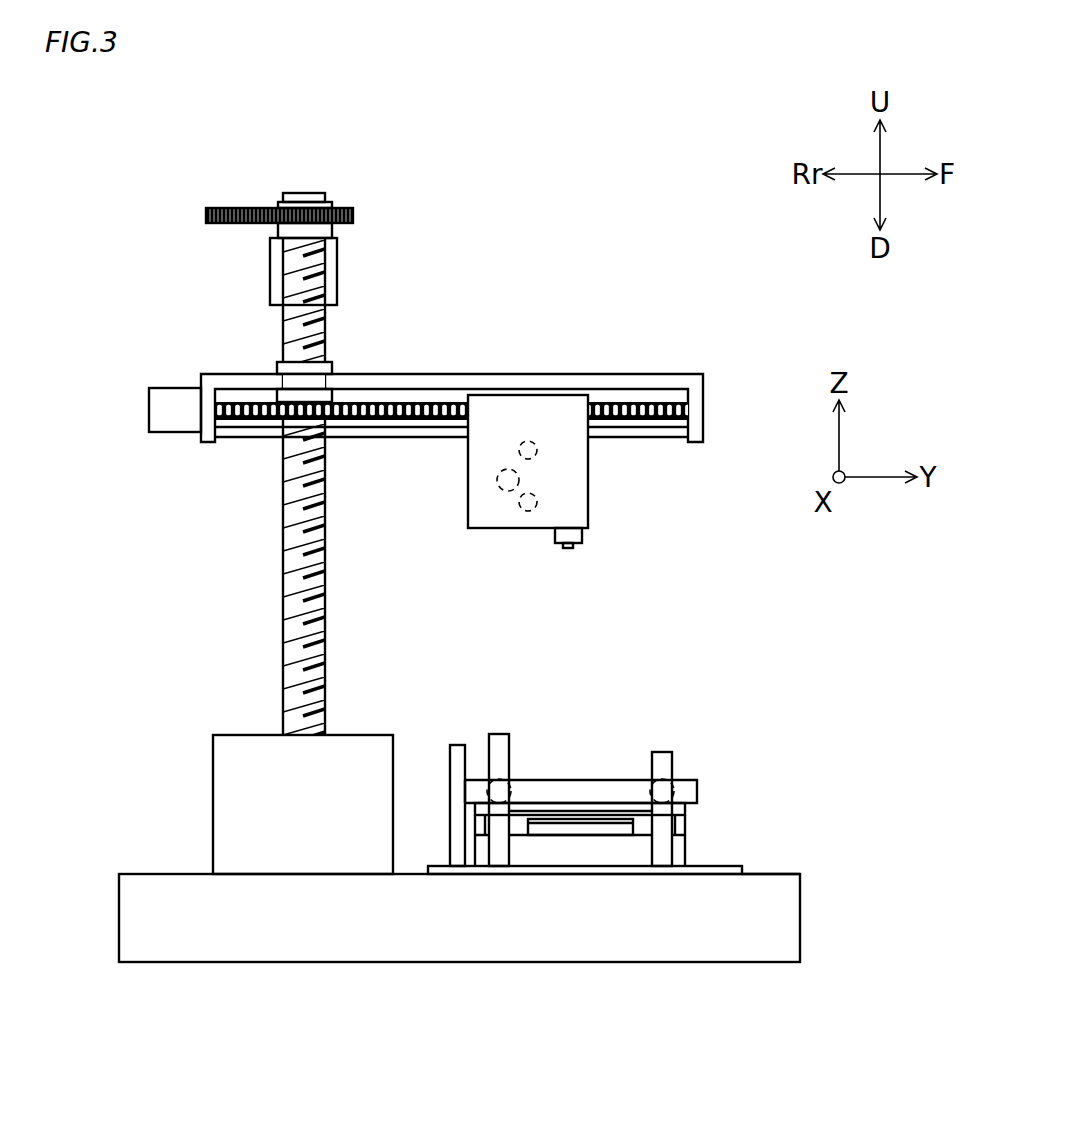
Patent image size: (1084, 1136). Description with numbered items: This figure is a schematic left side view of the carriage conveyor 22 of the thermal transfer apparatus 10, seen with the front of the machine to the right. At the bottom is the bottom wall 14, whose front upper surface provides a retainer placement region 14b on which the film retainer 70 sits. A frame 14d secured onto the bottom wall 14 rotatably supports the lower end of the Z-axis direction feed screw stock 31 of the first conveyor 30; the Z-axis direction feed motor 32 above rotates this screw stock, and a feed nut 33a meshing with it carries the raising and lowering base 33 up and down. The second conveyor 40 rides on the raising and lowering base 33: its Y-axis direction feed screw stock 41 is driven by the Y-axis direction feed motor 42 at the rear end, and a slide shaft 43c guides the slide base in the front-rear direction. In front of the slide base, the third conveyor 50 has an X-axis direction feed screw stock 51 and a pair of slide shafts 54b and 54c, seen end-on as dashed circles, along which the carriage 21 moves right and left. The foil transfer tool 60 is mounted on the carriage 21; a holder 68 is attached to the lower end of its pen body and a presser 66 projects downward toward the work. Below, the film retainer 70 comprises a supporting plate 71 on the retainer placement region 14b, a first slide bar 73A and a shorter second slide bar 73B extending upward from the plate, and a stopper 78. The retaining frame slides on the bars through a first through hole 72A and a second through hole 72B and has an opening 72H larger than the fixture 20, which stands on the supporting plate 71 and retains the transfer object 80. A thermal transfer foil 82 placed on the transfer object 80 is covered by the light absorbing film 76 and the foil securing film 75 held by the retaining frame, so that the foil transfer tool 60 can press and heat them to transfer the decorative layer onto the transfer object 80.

The thermal transfer apparatus 10 is at (645, 250).
The bottom wall 14 is at (801, 922).
The retainer placement region 14b is at (782, 872).
The frame 14d is at (228, 735).
The fixture 20 is at (533, 872).
The carriage 21 is at (517, 532).
The carriage conveyor 22 is at (433, 285).
The first conveyor 30 is at (368, 170).
The Z-axis direction feed screw stock 31 is at (283, 535).
The Z-axis direction feed motor 32 is at (272, 302).
The raising and lowering base 33 is at (457, 374).
The feed nut 33a is at (330, 365).
The second conveyor 40 is at (720, 350).
The Y-axis direction feed screw stock 41 is at (627, 400).
The Y-axis direction feed motor 42 is at (173, 434).
The slide shaft 43c is at (383, 437).
The third conveyor 50 is at (457, 525).
The X-axis direction feed screw stock 51 is at (497, 481).
The slide shaft 54b is at (528, 440).
The slide shaft 54c is at (537, 502).
The foil transfer tool 60 is at (590, 452).
The presser 66 is at (568, 550).
The holder 68 is at (585, 535).
The film retainer 70 is at (787, 722).
The supporting plate 71 is at (718, 872).
The first through hole 72A is at (523, 780).
The second through hole 72B is at (647, 780).
The opening 72H is at (490, 784).
The first slide bar 73A is at (503, 734).
The second slide bar 73B is at (663, 858).
The foil securing film 75 is at (683, 803).
The light absorbing film 76 is at (675, 818).
The stopper 78 is at (452, 742).
The transfer object 80 is at (628, 830).
The thermal transfer foil 82 is at (634, 822).